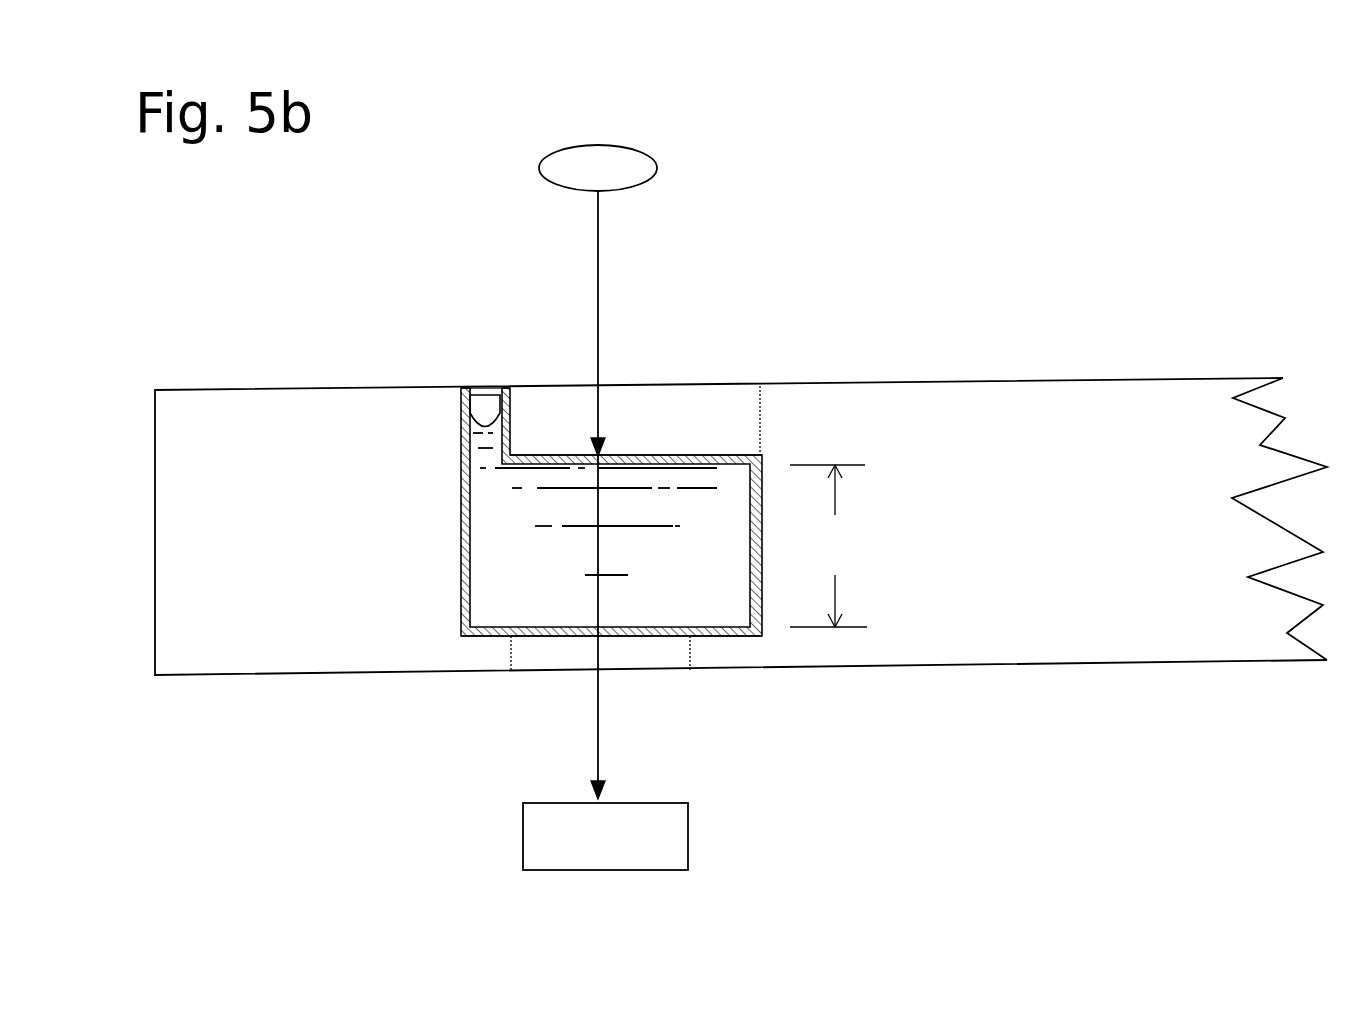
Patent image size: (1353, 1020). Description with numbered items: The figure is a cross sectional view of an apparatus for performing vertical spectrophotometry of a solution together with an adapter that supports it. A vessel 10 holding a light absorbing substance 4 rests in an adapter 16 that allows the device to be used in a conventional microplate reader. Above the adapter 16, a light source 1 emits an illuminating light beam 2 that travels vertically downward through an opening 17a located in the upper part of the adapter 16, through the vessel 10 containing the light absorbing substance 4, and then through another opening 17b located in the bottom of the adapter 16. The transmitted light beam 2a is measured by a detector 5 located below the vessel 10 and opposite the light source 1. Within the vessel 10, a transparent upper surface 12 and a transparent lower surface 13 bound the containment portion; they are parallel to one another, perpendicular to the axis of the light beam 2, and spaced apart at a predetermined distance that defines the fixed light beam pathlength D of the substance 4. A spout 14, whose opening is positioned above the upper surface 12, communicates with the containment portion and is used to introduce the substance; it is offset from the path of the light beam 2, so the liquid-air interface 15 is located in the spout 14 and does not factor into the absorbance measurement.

The light source 1 is at (645, 157).
The illuminating light beam 2 is at (598, 290).
The transmitted light beam 2a is at (599, 752).
The light absorbing substance 4 is at (723, 462).
The detector 5 is at (688, 845).
The vessel 10 is at (462, 572).
The transparent upper surface 12 is at (755, 455).
The transparent lower surface 13 is at (748, 637).
The spout 14 is at (488, 387).
The liquid-air interface 15 is at (460, 392).
The adapter 16 is at (741, 526).
The opening 17a is at (667, 413).
The opening 17b is at (577, 657).
The fixed light beam pathlength D is at (828, 546).